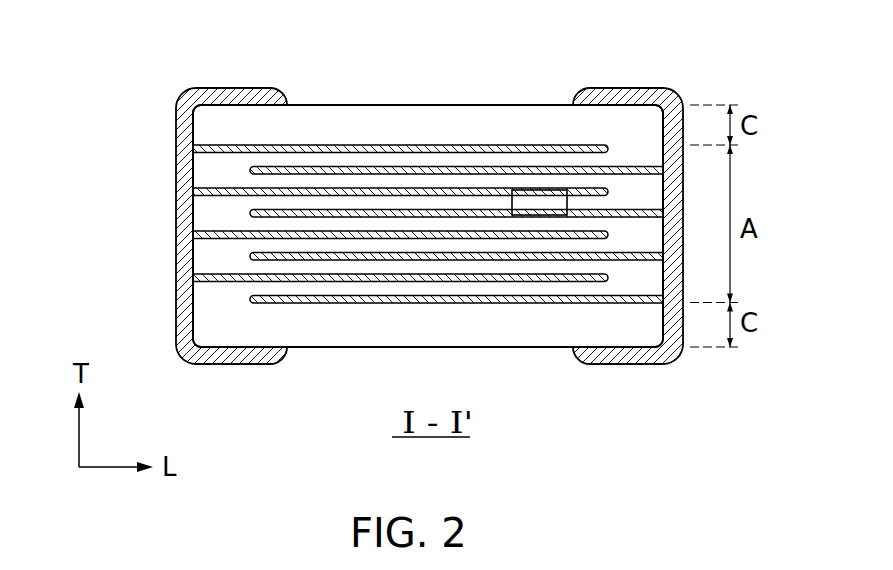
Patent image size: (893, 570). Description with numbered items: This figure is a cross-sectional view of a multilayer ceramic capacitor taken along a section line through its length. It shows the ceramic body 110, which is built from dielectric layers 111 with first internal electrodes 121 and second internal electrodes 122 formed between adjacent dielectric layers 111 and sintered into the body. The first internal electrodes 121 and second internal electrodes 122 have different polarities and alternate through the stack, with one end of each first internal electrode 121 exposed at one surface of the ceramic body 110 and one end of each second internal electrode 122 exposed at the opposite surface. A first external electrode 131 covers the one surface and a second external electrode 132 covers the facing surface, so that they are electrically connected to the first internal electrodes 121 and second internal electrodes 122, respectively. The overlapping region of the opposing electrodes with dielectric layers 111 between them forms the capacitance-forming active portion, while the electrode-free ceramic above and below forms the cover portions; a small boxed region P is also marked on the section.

The ceramic body 110 is at (431, 105).
The dielectric layer 111 is at (200, 160).
The first internal electrode 121 is at (225, 147).
The second internal electrode 122 is at (258, 169).
The first external electrode 131 is at (231, 87).
The second external electrode 132 is at (628, 88).
The region P (enlarged portion) P is at (537, 190).